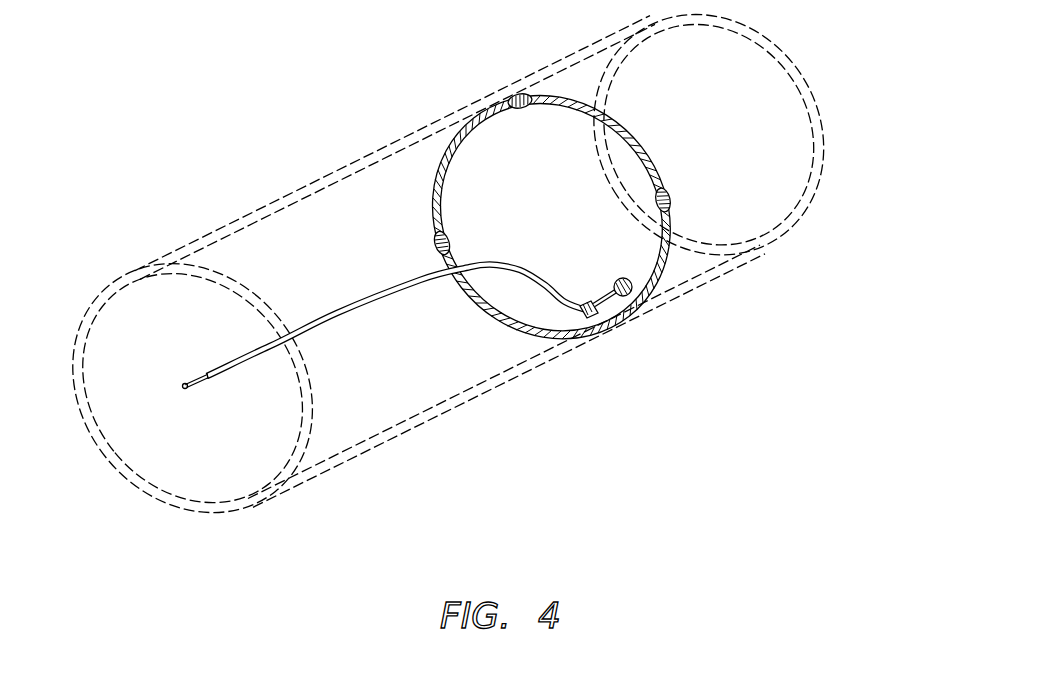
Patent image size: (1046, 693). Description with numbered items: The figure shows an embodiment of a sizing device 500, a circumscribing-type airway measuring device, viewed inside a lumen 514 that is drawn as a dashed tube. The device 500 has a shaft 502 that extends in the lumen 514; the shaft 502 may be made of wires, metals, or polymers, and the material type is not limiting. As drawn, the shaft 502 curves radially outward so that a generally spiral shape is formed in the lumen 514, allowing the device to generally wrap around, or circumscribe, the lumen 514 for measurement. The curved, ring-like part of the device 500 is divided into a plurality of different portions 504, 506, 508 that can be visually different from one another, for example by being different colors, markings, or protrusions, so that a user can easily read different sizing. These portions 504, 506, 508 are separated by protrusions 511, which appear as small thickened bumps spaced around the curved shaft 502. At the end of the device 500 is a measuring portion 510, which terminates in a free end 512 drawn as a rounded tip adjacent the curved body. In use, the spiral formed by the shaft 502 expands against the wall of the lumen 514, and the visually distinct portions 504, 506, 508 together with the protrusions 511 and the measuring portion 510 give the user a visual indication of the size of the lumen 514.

The sizing device 500 is at (424, 380).
The shaft 502 is at (332, 311).
The portion 504 is at (446, 280).
The portion 506 is at (564, 216).
The portion 508 is at (466, 122).
The measuring portion 510 is at (548, 338).
The protrusions 511 is at (519, 94).
The free end 512 is at (634, 298).
The lumen 514 is at (337, 169).